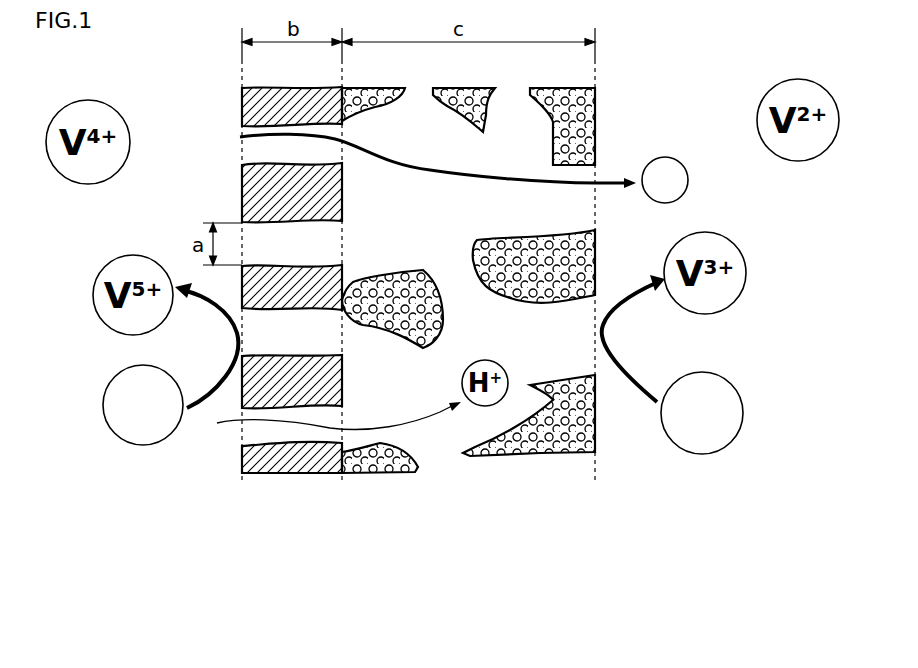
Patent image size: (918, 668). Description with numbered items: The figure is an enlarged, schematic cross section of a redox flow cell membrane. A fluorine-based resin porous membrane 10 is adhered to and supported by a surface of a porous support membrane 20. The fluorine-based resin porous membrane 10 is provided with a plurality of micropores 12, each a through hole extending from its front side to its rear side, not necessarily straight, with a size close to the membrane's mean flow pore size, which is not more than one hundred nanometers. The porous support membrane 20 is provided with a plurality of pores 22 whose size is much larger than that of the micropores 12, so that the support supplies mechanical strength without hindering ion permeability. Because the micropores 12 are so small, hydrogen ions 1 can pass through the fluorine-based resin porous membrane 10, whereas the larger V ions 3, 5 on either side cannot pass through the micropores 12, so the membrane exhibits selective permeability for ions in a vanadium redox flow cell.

The hydrogen ions 1 is at (677, 158).
The V ions 3 is at (745, 412).
The V ions 5 is at (170, 445).
The fluorine-based resin porous membrane 10 is at (290, 482).
The micropores 12 is at (247, 137).
The porous support membrane 20 is at (425, 487).
The pores 22 is at (512, 192).